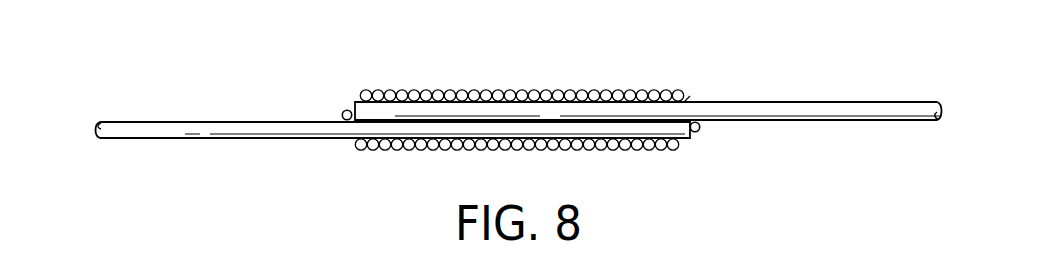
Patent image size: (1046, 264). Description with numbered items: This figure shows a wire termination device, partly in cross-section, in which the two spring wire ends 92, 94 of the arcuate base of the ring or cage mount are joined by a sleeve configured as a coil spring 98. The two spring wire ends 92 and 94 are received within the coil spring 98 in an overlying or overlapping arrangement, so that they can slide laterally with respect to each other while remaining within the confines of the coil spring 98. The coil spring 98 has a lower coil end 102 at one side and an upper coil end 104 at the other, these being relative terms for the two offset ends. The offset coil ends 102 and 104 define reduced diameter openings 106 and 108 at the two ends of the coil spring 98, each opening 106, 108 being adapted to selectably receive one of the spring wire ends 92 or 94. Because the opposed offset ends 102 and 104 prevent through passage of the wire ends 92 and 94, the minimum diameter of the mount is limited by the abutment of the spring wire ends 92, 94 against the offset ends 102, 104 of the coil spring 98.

The spring wire end 92 is at (536, 110).
The spring wire end 94 is at (412, 128).
The coil spring 98 is at (485, 90).
The lower coil end 102 is at (698, 131).
The upper coil end 104 is at (343, 113).
The reduced diameter opening 106 is at (692, 97).
The reduced diameter opening 108 is at (355, 145).